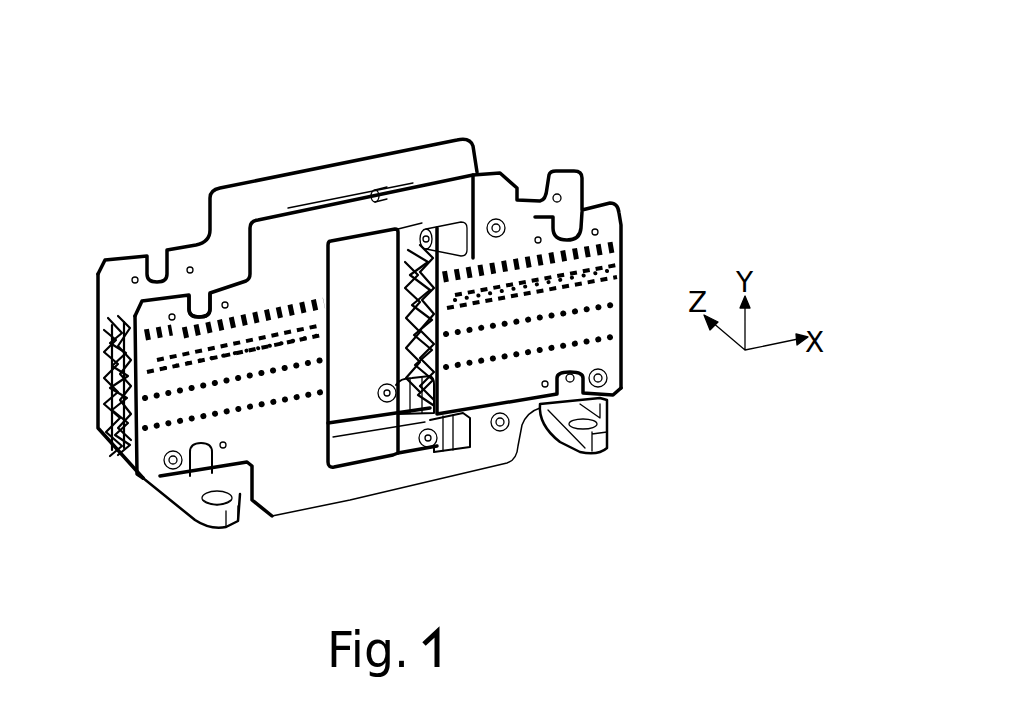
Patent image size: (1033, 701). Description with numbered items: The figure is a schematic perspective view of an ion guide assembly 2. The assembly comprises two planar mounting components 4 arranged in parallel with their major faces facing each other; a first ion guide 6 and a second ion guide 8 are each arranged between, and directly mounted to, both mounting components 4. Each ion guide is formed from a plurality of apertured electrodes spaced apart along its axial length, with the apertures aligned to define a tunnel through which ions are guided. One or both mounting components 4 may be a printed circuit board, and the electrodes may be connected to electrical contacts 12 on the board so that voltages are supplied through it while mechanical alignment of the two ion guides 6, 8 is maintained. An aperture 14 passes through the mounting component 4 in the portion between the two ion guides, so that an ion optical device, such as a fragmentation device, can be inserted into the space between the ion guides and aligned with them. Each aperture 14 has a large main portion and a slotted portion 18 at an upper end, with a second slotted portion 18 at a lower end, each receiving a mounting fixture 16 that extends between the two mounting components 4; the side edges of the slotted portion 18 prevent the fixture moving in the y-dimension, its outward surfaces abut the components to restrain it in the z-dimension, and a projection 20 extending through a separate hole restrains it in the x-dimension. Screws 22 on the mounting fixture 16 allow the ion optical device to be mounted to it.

The ion guide assembly 2 is at (197, 48).
The planar mounting component 4 is at (478, 387).
The first ion guide 6 is at (112, 348).
The second ion guide 8 is at (540, 292).
The electrical contact 12 is at (211, 298).
The aperture 14 is at (358, 260).
The mounting fixture 16 is at (413, 183).
The slotted portion 18 is at (465, 210).
The projection 20 is at (506, 221).
The screw 22 is at (432, 447).